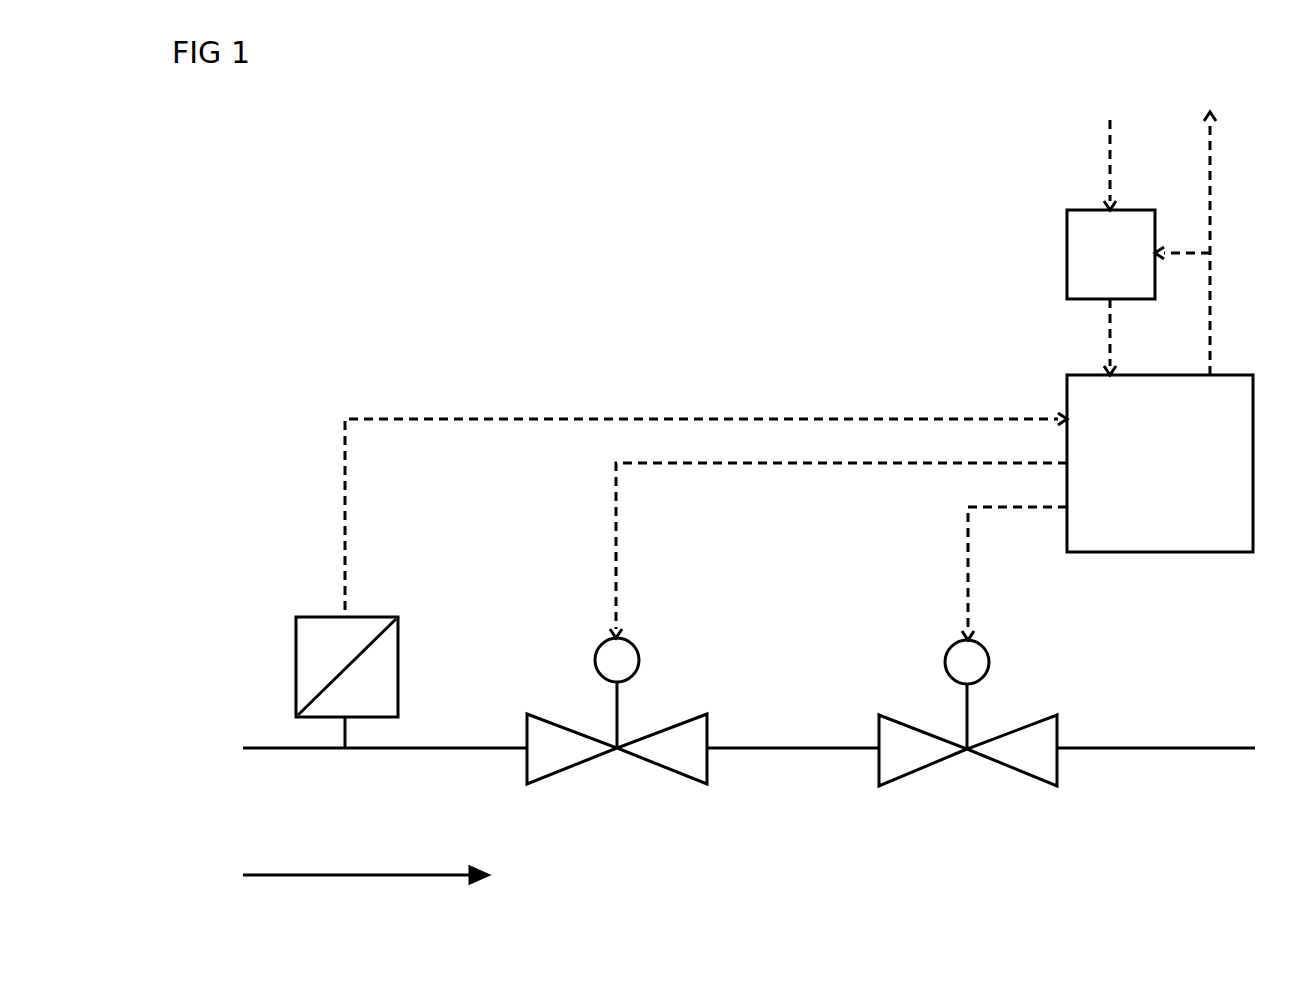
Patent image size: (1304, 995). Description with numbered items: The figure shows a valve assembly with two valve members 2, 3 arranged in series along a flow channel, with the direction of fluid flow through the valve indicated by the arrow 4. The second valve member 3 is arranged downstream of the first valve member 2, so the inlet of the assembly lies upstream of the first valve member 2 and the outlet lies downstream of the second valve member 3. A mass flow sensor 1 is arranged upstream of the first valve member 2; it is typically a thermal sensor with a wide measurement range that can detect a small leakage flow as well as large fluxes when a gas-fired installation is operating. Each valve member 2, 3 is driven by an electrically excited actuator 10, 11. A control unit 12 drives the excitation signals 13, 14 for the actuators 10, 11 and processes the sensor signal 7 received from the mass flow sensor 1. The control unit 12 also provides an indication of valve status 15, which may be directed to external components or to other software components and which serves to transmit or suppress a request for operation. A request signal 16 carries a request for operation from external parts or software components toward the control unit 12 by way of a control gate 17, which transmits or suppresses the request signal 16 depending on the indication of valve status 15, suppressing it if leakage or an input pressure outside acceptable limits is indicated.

The mass flow sensor 1 is at (347, 682).
The first valve member 2 is at (617, 766).
The second valve member 3 is at (968, 766).
The arrow 4 is at (365, 857).
The sensor signal 7 is at (706, 494).
The actuator 10 is at (643, 693).
The actuator 11 is at (993, 694).
The control unit 12 is at (1160, 425).
The excitation signal 13 is at (816, 550).
The excitation signal 14 is at (993, 573).
The indication of valve status 15 is at (1209, 243).
The request signal 16 is at (1088, 165).
The control gate 17 is at (1111, 254).